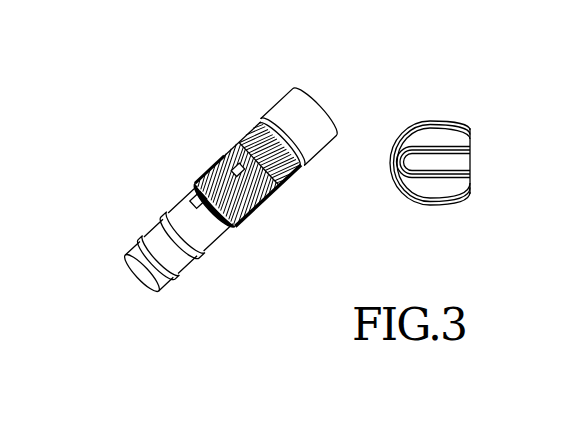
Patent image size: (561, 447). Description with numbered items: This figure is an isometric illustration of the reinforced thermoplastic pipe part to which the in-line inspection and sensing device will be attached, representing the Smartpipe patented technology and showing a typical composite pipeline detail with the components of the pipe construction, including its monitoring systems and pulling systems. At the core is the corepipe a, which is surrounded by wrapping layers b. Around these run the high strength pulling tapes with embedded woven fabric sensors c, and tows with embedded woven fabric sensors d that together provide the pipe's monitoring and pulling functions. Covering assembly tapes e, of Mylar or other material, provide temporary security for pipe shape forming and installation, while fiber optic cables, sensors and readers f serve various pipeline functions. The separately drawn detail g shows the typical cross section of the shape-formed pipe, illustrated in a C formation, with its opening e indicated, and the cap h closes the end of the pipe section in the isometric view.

The corepipe a is at (165, 277).
The wrapping layers b is at (193, 253).
The high strength pulling tapes with embedded woven fabric sensors c is at (207, 200).
The tows with embedded woven fabric sensors d is at (254, 199).
The covering assembly tapes e is at (472, 158).
The fiber optic cables, sensors and readers f is at (298, 172).
The clip g is at (430, 116).
The cap h is at (294, 87).